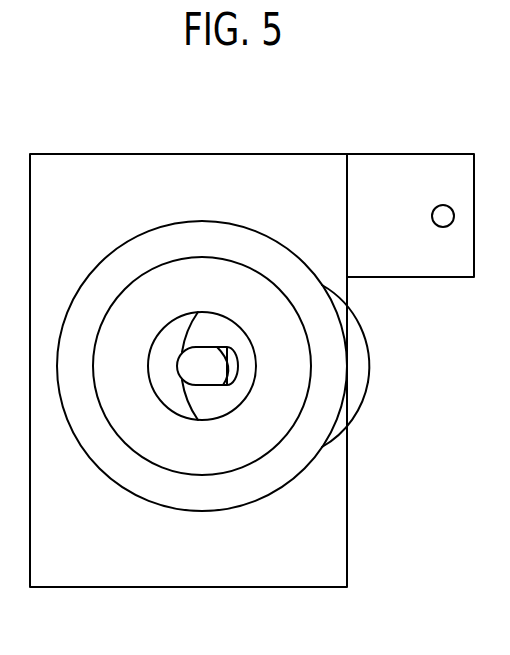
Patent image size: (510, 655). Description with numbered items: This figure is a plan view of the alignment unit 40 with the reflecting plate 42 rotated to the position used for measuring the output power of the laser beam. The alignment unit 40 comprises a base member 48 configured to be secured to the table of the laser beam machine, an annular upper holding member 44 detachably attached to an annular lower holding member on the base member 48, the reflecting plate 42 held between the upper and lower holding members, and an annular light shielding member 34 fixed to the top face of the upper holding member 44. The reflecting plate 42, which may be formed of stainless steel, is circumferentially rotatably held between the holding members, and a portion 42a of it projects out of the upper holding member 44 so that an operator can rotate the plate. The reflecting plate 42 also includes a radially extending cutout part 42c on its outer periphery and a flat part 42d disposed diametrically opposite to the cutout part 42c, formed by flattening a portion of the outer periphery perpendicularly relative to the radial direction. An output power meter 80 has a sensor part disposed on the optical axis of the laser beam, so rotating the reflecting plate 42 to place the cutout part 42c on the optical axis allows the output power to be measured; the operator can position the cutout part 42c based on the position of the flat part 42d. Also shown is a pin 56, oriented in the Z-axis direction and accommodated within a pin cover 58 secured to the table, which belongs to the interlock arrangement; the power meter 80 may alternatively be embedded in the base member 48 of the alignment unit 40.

The alignment unit 40 is at (272, 131).
The base member 48 is at (93, 190).
The pin cover 58 is at (392, 190).
The pin 56 is at (443, 206).
The annular light shielding member 34 is at (263, 473).
The annular upper holding member 44 is at (291, 454).
The reflecting plate 42 is at (227, 398).
The projecting portion 42a is at (350, 400).
The cutout part 42c is at (217, 347).
The flat part 42d is at (365, 362).
The output power meter 80 is at (193, 367).